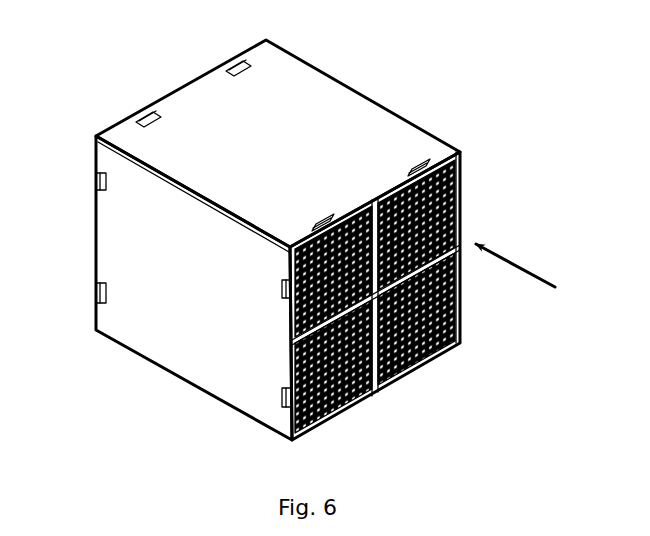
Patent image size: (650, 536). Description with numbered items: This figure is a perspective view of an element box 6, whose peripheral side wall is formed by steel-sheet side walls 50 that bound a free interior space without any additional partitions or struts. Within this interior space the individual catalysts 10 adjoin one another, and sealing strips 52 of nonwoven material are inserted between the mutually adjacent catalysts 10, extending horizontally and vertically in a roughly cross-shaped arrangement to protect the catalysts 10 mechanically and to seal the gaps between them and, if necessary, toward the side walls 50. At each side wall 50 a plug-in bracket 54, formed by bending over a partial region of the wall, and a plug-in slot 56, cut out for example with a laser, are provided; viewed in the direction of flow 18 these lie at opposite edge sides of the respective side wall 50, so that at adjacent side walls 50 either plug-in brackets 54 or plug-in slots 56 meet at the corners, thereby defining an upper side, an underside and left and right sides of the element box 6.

The element box 6 is at (301, 237).
The catalyst 10 is at (462, 166).
The direction of flow 18 is at (517, 262).
The side wall 50 is at (316, 101).
The sealing strip 52 is at (377, 391).
The plug-in bracket 54 is at (142, 116).
The plug-in slot 56 is at (233, 60).